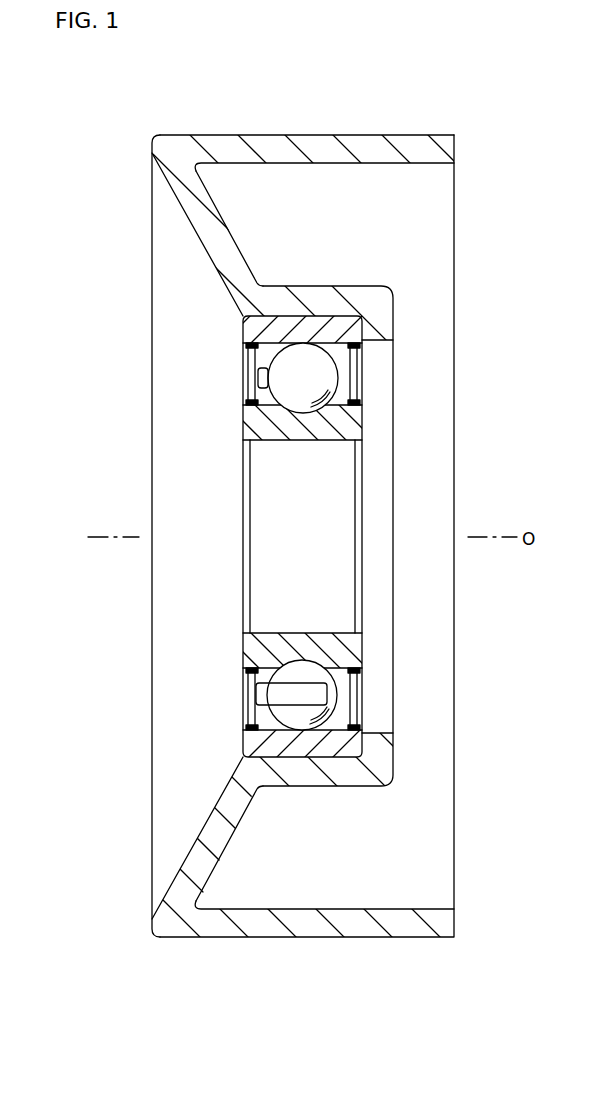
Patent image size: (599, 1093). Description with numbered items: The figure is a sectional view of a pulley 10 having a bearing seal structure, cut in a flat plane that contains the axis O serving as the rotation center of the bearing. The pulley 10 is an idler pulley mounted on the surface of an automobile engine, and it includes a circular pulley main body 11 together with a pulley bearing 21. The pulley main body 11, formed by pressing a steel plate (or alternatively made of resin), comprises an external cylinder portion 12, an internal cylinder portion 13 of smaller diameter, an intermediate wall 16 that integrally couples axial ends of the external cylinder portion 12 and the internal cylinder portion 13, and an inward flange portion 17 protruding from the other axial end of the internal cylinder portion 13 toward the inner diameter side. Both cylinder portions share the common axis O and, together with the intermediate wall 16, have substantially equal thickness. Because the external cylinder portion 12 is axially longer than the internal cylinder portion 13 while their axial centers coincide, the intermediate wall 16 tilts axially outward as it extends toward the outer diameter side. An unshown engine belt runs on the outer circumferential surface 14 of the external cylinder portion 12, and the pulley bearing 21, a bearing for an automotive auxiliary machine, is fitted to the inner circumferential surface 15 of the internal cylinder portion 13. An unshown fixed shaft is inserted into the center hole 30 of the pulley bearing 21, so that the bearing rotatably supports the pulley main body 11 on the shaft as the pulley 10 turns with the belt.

The pulley 10 is at (127, 104).
The pulley main body 11 is at (156, 144).
The external cylinder portion 12 is at (447, 147).
The internal cylinder portion 13 is at (324, 293).
The outer circumferential surface 14 is at (416, 135).
The inner circumferential surface 15 is at (249, 327).
The intermediate wall 16 is at (212, 237).
The inward flange portion 17 is at (380, 340).
The pulley bearing 21 is at (231, 380).
The center hole 30 is at (284, 444).